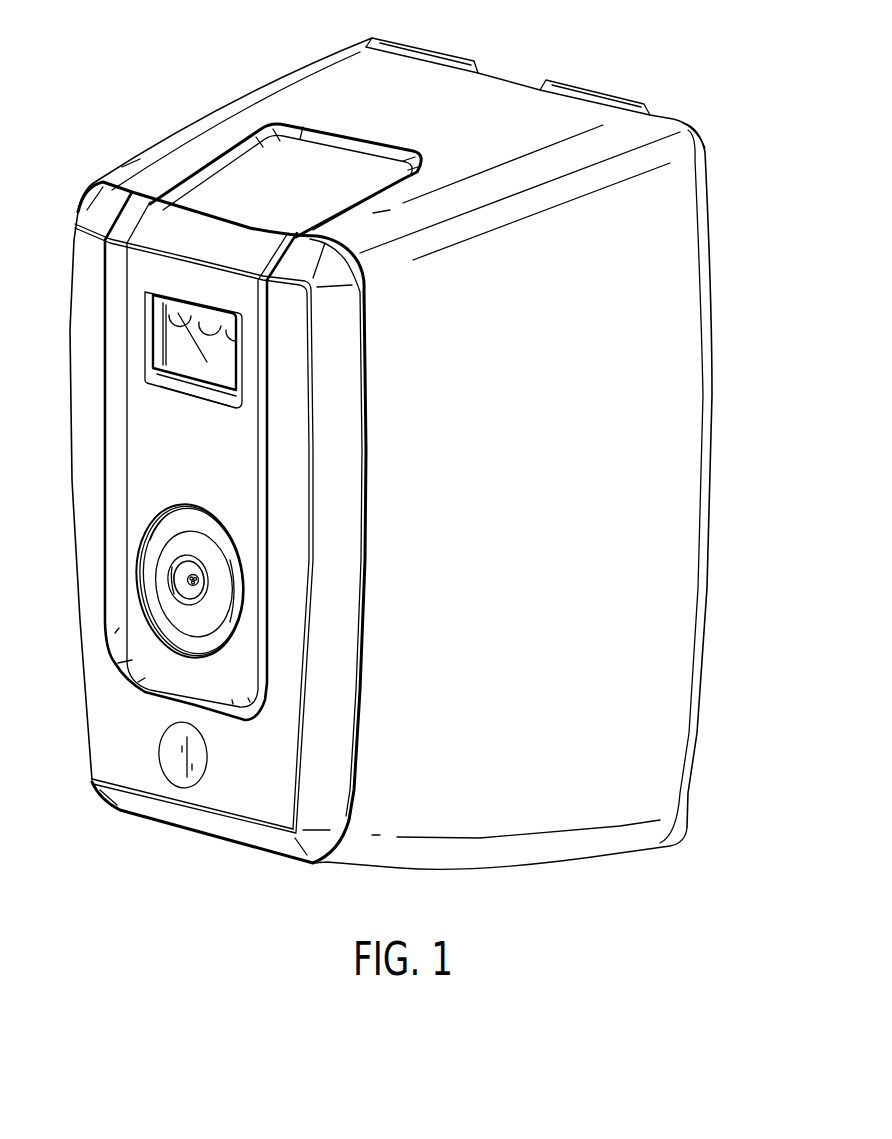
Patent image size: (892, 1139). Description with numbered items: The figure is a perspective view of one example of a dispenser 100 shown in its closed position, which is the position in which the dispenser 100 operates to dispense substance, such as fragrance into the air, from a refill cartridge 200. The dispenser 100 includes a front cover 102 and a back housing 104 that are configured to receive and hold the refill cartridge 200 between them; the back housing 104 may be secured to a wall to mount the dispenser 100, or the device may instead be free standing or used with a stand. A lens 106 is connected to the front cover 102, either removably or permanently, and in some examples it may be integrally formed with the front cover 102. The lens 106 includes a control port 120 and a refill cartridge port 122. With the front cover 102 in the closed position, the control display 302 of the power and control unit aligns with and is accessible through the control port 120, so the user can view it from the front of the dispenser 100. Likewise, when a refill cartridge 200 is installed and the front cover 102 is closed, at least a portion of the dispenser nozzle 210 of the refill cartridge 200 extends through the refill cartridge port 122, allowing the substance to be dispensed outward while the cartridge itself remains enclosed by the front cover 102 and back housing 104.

The dispenser 100 is at (111, 73).
The front cover 102 is at (270, 95).
The back housing 104 is at (698, 135).
The lens 106 is at (140, 452).
The control port 120 is at (155, 332).
The refill cartridge port 122 is at (140, 552).
The refill cartridge 200 is at (170, 587).
The dispenser nozzle 210 is at (195, 617).
The control display 302 is at (223, 357).